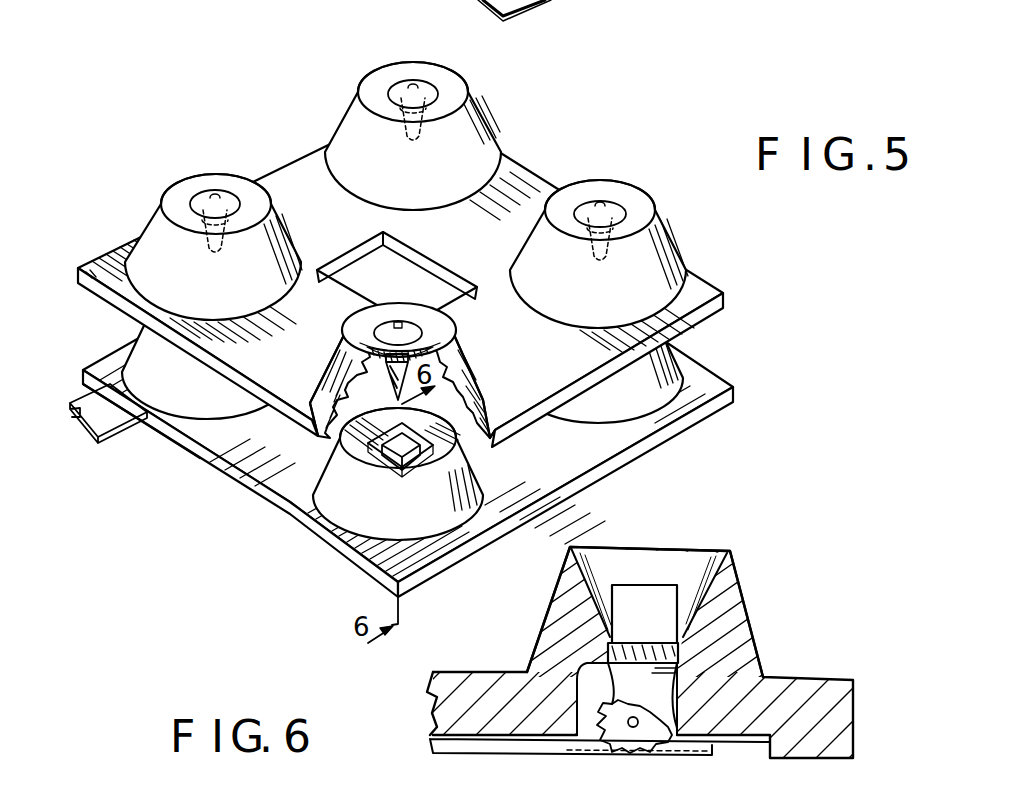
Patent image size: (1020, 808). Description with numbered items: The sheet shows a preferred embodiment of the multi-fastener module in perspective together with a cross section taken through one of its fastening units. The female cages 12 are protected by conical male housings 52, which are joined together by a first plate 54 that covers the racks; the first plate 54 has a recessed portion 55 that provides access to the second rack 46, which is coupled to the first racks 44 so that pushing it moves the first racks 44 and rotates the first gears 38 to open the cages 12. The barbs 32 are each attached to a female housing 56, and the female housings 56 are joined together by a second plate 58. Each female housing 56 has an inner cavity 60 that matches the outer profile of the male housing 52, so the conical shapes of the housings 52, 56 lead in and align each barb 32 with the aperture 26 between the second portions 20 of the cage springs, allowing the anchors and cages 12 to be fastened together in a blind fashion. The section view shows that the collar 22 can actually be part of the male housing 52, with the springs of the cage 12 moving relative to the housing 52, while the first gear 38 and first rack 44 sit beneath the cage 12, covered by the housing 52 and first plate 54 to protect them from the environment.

In FIG. 5, the female cage 12 is at (350, 450).
In FIG. 6, the female cage 12 is at (643, 597).
In FIG. 5, the second portion 20 is at (368, 458).
In FIG. 6, the collar 22 is at (680, 657).
In FIG. 5, the aperture 26 is at (362, 428).
In FIG. 5, the barb 32 is at (457, 340).
In FIG. 6, the first gear 38 is at (621, 706).
In FIG. 6, the first rack 44 is at (433, 742).
In FIG. 5, the second rack 46 is at (100, 420).
In FIG. 5, the male housing 52 is at (207, 397).
In FIG. 6, the male housing 52 is at (740, 580).
In FIG. 5, the first plate 54 is at (600, 443).
In FIG. 6, the first plate 54 is at (477, 683).
In FIG. 5, the recessed portion 55 is at (147, 437).
In FIG. 5, the female housing 56 is at (357, 90).
In FIG. 5, the second plate 58 is at (518, 180).
In FIG. 5, the inner cavity 60 is at (490, 387).